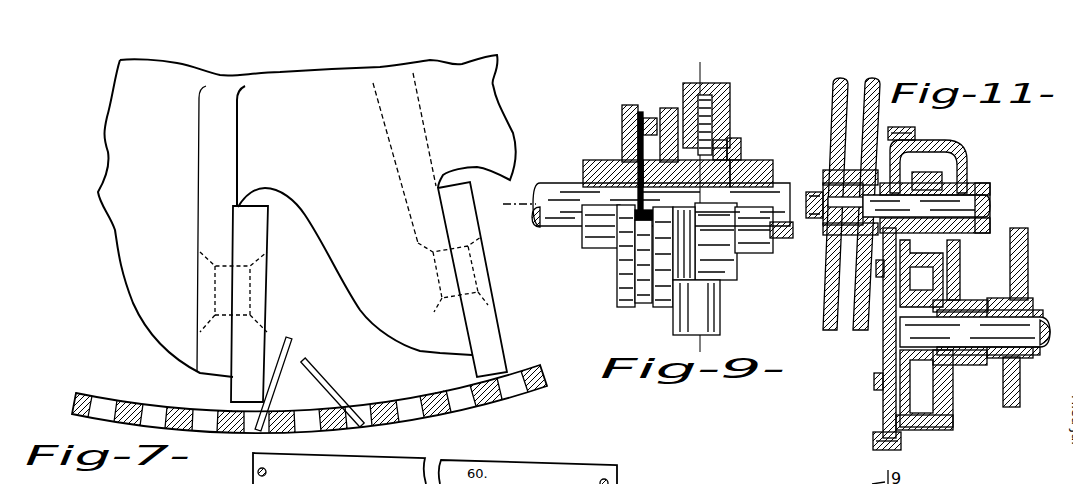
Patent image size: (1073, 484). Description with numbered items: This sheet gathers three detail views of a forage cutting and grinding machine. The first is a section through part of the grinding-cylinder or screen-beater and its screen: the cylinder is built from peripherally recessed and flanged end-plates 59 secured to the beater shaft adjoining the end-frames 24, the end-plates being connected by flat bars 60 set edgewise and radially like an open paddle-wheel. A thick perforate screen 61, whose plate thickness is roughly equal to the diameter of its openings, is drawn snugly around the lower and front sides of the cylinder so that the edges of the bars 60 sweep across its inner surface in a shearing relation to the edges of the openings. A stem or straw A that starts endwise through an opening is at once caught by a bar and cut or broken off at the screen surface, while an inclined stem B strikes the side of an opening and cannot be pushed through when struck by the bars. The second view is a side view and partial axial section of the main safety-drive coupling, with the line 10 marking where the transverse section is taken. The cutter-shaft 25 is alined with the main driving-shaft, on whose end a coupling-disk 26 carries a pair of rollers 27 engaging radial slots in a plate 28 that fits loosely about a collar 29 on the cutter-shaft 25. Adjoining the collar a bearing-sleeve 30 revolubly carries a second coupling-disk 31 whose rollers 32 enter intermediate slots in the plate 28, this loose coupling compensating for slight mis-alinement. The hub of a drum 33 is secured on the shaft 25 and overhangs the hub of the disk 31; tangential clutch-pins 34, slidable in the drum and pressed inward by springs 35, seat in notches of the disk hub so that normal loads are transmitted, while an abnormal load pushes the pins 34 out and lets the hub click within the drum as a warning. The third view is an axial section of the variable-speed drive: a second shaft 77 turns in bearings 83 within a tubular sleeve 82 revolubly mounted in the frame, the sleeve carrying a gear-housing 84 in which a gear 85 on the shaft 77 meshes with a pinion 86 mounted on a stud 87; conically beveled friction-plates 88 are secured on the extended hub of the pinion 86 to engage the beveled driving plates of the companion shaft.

In FIG. 7, the end-plates 59 is at (307, 216).
In FIG. 7, the flat bars 60 is at (270, 338).
In FIG. 7, the screen 61 is at (230, 430).
In FIG. 7, the stem or straw A is at (297, 343).
In FIG. 7, the stem B is at (328, 376).
In FIG. 9, the section line 10 is at (706, 349).
In FIG. 9, the cutter-shaft 25 is at (790, 236).
In FIG. 9, the coupling-disk 26 is at (622, 290).
In FIG. 9, the rollers 27 is at (648, 112).
In FIG. 9, the plate 28 is at (640, 305).
In FIG. 9, the collar 29 is at (615, 162).
In FIG. 9, the bearing-sleeve 30 is at (738, 168).
In FIG. 9, the coupling-disk 31 is at (658, 308).
In FIG. 9, the rollers 32 is at (635, 227).
In FIG. 9, the drum 33 is at (740, 150).
In FIG. 9, the clutch-pins 34 is at (728, 135).
In FIG. 9, the springs 35 is at (730, 110).
In FIG. 11, the end-frames 24 is at (1028, 256).
In FIG. 11, the second shaft 77 is at (1010, 340).
In FIG. 11, the tubular sleeve 82 is at (1033, 365).
In FIG. 11, the bearings 83 is at (968, 365).
In FIG. 11, the gear-housing 84 is at (960, 256).
In FIG. 11, the gear 85 is at (920, 385).
In FIG. 11, the pinion 86 is at (950, 178).
In FIG. 11, the stud 87 is at (990, 203).
In FIG. 11, the friction-plates 88 is at (862, 330).